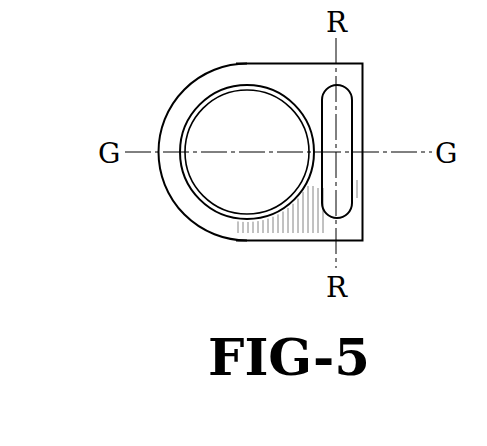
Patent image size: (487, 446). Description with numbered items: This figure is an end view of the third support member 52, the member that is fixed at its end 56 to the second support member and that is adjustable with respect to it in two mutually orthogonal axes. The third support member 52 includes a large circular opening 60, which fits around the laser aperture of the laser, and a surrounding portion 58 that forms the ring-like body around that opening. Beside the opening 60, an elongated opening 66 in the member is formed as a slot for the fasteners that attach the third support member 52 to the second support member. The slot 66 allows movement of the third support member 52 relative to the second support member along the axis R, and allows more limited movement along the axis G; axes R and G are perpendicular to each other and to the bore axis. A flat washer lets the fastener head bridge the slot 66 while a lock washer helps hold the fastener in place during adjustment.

The third support member 52 is at (271, 138).
The end 56 is at (362, 215).
The annular ring portion 58 is at (183, 91).
The opening 60 is at (284, 97).
The slot 66 is at (351, 133).